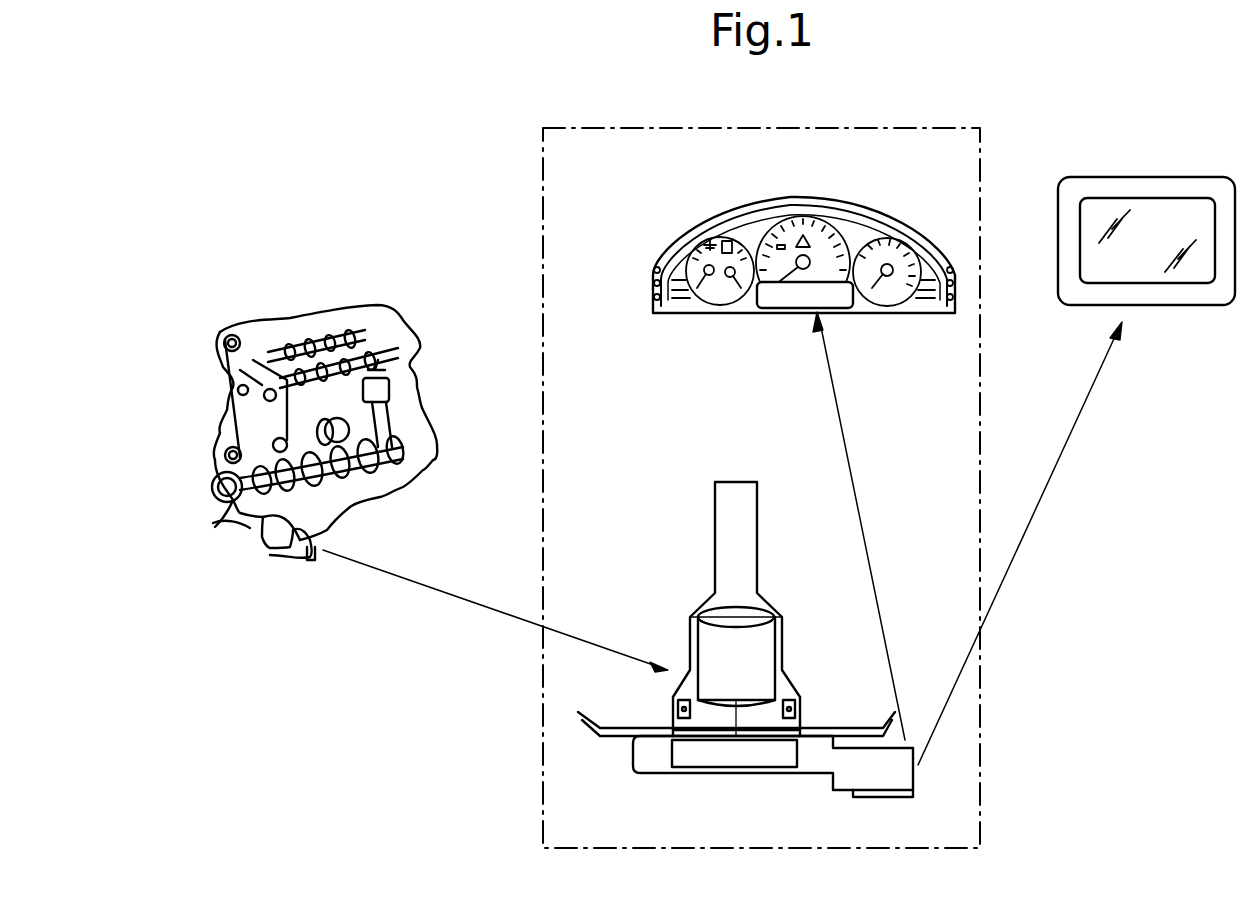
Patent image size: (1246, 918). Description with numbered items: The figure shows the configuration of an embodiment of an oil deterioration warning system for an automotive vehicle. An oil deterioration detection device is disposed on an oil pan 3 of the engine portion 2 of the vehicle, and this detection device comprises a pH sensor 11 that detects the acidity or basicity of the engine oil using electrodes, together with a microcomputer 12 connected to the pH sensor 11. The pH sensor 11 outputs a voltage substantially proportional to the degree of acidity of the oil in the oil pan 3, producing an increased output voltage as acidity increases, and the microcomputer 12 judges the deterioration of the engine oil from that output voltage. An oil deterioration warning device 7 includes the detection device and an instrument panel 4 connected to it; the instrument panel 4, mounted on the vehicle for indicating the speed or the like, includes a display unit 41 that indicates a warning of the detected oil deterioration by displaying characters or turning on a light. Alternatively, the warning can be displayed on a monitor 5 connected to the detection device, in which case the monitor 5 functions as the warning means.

The engine 2 is at (337, 308).
The oil pan 3 is at (238, 525).
The instrument panel 4 is at (798, 197).
The monitor 5 is at (1136, 177).
The oil deterioration warning device 7 is at (795, 129).
The pH sensor 11 is at (782, 645).
The microcomputer 12 is at (672, 748).
The display unit 41 is at (745, 306).